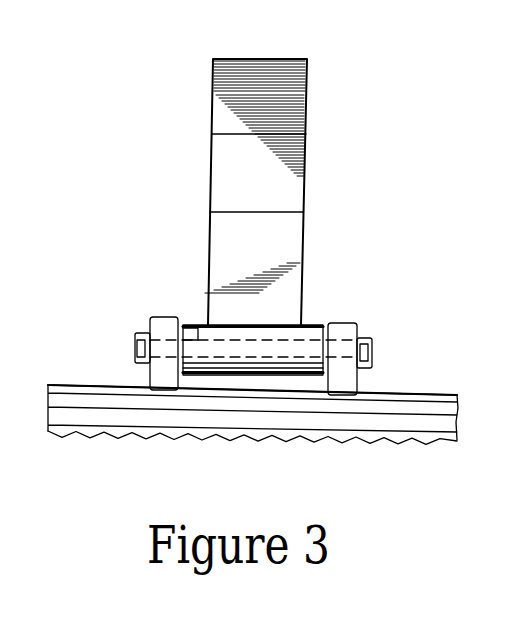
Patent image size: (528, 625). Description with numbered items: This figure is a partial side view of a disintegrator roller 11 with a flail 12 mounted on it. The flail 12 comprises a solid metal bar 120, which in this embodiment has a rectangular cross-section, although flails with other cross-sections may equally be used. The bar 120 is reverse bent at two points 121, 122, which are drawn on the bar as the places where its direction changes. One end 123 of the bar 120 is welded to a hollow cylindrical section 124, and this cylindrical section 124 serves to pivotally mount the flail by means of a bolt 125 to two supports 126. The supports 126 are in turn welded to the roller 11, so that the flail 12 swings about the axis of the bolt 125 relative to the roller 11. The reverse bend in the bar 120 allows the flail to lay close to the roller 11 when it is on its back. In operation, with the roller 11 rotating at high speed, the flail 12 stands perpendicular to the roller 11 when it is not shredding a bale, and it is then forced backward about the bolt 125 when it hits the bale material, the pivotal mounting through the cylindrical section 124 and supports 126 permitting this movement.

The roller 11 is at (390, 393).
The flail 12 is at (252, 252).
The solid metal bar 120 is at (306, 156).
The reverse bend point 121 is at (212, 134).
The reverse bend point 122 is at (210, 212).
The end of the bar 123 is at (302, 325).
The hollow cylindrical section 124 is at (302, 372).
The bolt 125 is at (198, 322).
The supports 126 is at (347, 327).